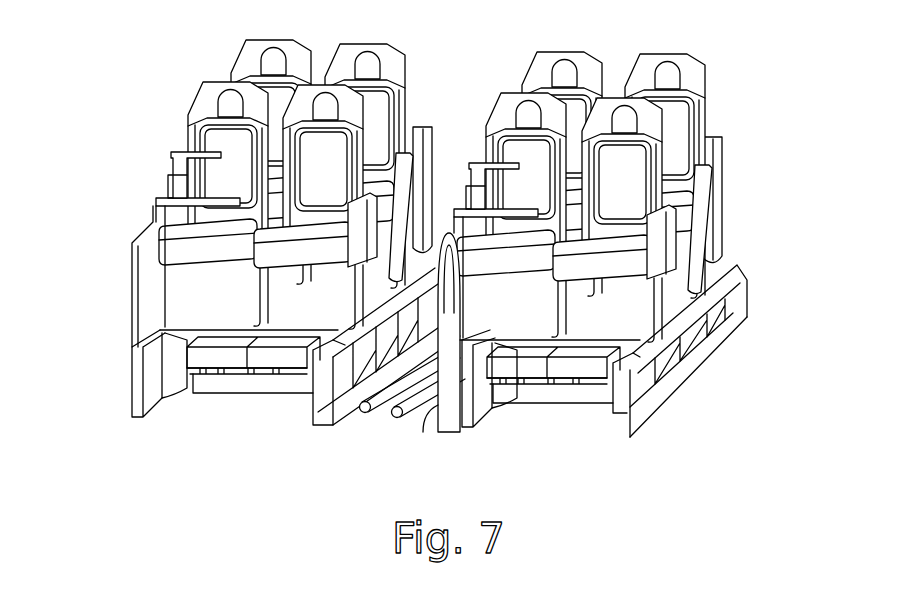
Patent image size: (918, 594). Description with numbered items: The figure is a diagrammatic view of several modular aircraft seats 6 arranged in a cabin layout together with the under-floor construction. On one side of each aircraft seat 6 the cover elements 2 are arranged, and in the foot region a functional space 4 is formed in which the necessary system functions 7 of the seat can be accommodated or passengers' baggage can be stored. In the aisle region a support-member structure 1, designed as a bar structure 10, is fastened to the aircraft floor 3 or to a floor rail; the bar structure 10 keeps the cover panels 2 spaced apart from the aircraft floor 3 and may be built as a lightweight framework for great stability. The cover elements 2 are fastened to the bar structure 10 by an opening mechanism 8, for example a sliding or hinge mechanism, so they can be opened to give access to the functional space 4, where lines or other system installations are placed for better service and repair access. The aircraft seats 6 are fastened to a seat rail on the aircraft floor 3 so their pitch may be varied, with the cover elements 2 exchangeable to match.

The support-member structure 1 is at (284, 240).
The cover element 2 is at (438, 332).
The aircraft floor 3 is at (733, 325).
The functional space 4 is at (235, 356).
The aircraft seat 6 is at (218, 150).
The system functions 7 is at (362, 408).
The opening mechanism 8 is at (424, 242).
The bar structure 10 is at (437, 410).